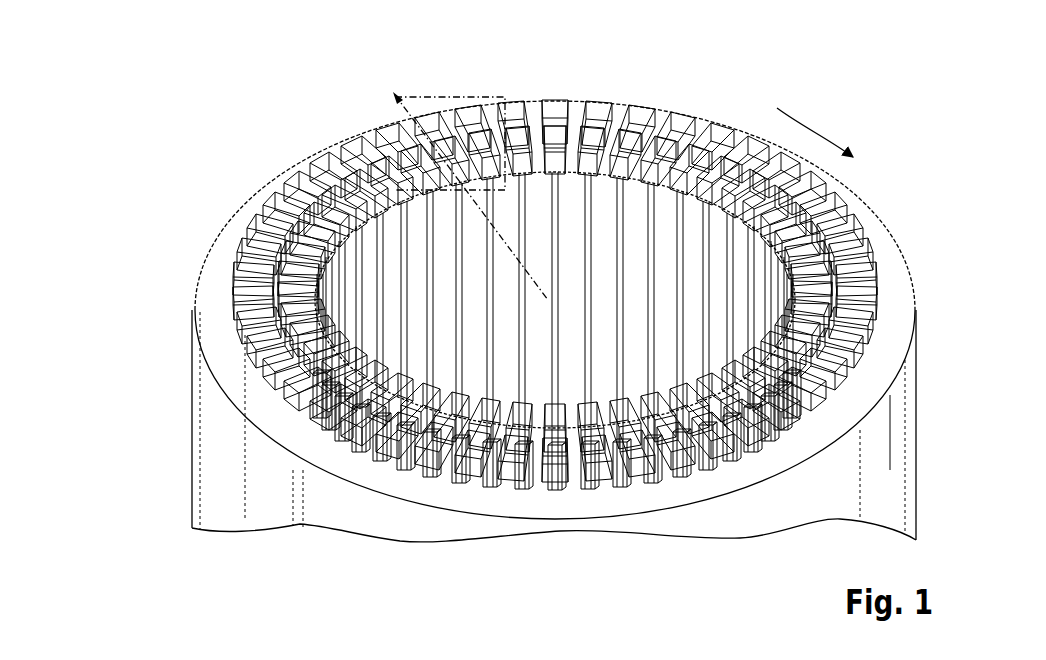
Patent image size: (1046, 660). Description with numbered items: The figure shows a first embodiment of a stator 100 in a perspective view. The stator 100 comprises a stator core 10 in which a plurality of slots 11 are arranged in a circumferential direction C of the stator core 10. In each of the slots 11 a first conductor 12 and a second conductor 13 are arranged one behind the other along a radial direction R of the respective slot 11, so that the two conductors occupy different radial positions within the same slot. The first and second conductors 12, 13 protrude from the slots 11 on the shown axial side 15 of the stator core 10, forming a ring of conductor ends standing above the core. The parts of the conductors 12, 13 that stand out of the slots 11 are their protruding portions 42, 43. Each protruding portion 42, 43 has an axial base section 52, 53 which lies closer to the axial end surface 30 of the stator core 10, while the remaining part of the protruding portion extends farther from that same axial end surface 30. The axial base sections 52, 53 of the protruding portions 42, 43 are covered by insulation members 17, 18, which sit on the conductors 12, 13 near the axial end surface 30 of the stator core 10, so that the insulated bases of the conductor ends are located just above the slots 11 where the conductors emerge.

The stator 100 is at (318, 92).
The stator core 10 is at (232, 242).
The slots 11 is at (557, 88).
The first conductor 12 is at (440, 100).
The second conductor 13 is at (447, 108).
The axial side 15 is at (280, 163).
The insulation member 17 is at (432, 457).
The insulation member 18 is at (458, 450).
The axial end surface 30 is at (884, 250).
The protruding portion 42 is at (250, 353).
The protruding portion 43 is at (287, 293).
The axial base section 52 is at (327, 432).
The axial base section 53 is at (681, 178).
The radial direction R is at (386, 110).
The circumferential direction C is at (810, 122).